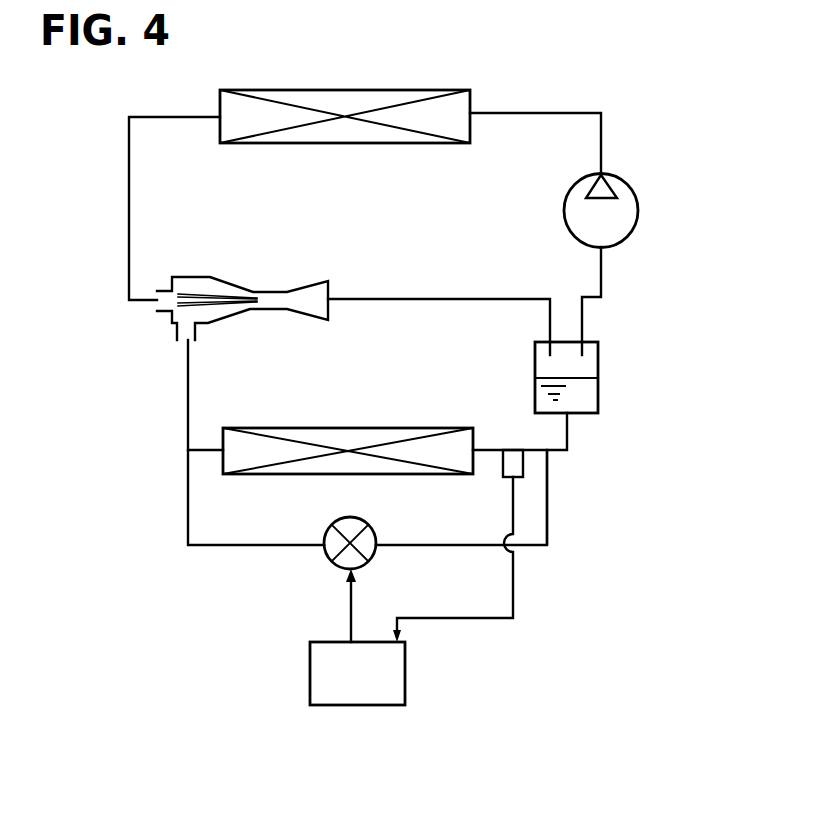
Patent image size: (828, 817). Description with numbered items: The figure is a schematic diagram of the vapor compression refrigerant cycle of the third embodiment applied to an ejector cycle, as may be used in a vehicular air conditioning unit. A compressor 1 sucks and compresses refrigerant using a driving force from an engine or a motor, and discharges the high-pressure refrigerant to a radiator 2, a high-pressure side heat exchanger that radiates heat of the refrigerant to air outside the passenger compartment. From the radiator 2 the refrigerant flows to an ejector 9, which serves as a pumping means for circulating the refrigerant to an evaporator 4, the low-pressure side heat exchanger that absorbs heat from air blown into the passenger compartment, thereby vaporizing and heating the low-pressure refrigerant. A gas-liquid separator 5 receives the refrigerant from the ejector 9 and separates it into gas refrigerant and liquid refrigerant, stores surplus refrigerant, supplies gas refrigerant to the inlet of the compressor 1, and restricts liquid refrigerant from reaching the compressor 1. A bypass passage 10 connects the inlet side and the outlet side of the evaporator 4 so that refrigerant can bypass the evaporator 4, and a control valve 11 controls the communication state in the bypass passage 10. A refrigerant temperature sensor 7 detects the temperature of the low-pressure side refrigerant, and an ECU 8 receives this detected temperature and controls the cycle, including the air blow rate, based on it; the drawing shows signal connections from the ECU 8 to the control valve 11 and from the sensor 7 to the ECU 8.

The compressor 1 is at (639, 207).
The radiator 2 is at (407, 90).
The evaporator 4 is at (410, 428).
The gas-liquid separator 5 is at (598, 383).
The refrigerant temperature sensor 7 is at (523, 457).
The ECU (electronic control unit) 8 is at (405, 672).
The ejector 9 is at (274, 290).
The bypass passage 10 is at (547, 500).
The control valve 11 is at (376, 560).